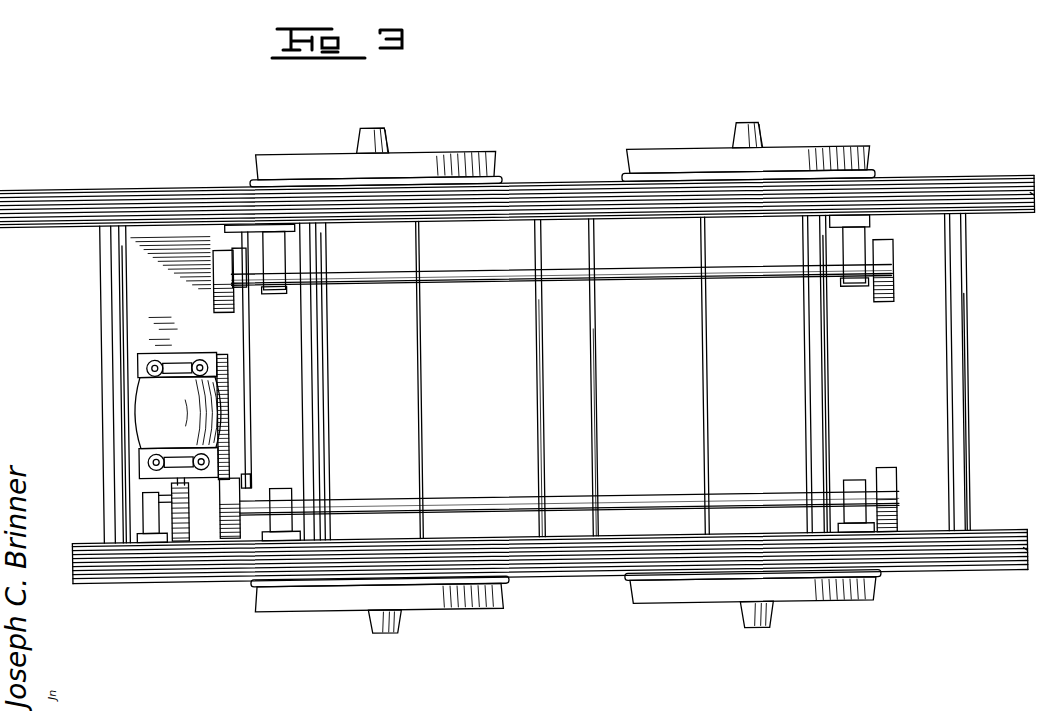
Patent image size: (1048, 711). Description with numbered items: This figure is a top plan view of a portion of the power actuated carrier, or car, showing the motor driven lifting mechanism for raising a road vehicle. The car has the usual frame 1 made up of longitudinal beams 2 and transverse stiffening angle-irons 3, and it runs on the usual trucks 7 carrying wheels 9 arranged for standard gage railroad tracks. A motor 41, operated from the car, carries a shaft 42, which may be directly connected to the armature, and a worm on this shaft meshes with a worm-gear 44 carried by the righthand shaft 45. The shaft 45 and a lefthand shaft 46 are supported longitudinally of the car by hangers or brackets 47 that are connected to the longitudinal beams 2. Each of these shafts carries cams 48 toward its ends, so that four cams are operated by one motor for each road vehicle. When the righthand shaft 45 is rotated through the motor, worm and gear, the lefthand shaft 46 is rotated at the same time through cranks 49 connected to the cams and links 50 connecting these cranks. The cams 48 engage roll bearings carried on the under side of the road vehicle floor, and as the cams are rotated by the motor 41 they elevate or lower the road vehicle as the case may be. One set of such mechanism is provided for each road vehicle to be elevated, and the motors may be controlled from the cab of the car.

The frame 1 is at (517, 185).
The longitudinal beams 2 is at (153, 184).
The transverse stiffening angle-irons 3 is at (103, 382).
The trucks 7 is at (422, 342).
The wheels 9 is at (628, 152).
The motor 41 is at (181, 416).
The shaft 42 is at (175, 471).
The worm-gear 44 is at (186, 536).
The shaft 45 is at (482, 497).
The shaft 46 is at (492, 270).
The hangers or brackets 47 is at (284, 249).
The cams 48 is at (214, 283).
The cranks 49 is at (246, 484).
The links 50 is at (251, 343).